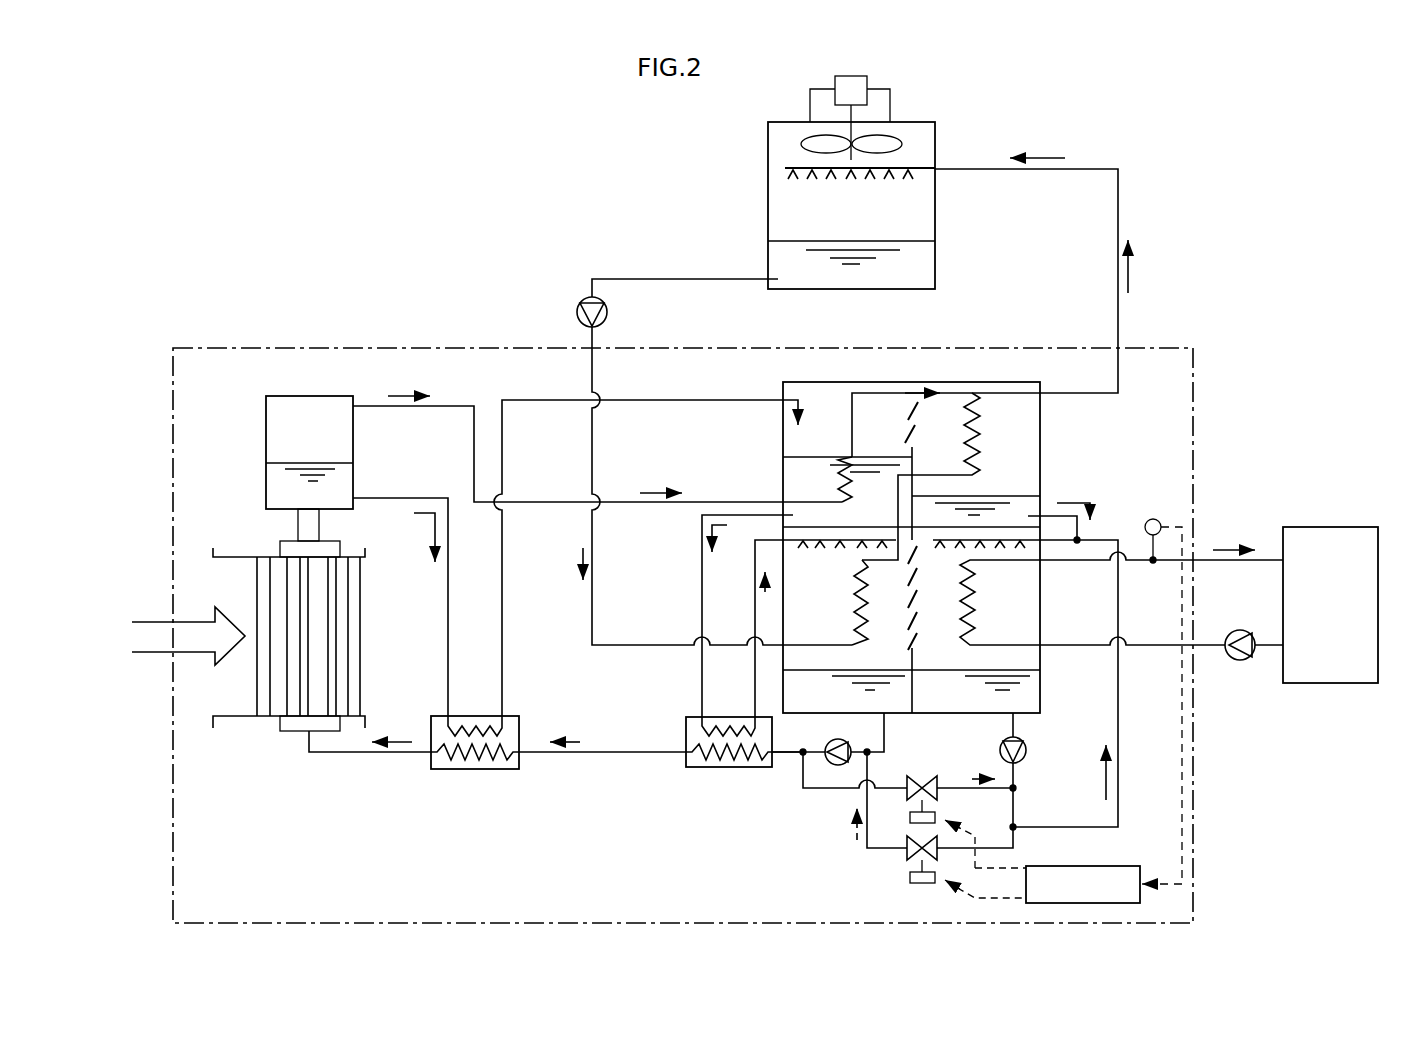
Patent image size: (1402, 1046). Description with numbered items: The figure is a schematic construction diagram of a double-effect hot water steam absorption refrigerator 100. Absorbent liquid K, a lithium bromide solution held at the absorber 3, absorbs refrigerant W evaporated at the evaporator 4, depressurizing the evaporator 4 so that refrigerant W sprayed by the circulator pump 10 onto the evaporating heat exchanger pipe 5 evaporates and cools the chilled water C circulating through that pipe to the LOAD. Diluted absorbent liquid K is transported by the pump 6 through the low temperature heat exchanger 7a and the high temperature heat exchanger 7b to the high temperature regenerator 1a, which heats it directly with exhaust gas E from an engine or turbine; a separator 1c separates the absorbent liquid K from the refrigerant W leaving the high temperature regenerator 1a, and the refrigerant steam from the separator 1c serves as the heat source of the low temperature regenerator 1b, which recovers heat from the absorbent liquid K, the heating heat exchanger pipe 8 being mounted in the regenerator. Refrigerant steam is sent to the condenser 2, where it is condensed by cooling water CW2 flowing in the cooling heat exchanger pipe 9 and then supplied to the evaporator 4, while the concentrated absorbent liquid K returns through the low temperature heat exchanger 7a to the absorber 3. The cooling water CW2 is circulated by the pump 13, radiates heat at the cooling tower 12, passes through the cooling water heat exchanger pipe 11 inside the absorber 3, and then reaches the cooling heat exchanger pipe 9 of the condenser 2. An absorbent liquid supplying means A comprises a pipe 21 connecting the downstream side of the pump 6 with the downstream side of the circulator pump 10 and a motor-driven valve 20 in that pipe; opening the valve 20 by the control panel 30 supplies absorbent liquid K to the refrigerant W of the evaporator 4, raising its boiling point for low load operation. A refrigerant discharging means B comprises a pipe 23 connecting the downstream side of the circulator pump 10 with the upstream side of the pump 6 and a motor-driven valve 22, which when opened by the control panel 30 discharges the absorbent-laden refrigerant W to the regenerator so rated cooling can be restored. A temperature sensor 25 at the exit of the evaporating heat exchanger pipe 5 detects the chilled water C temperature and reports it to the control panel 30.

The absorption refrigerator 100 is at (1198, 386).
The high temperature regenerator 1a is at (285, 735).
The low temperature regenerator 1b is at (800, 432).
The separator 1c is at (290, 396).
The condenser 2 is at (1002, 477).
The absorber 3 is at (833, 648).
The evaporator 4 is at (980, 655).
The evaporating heat exchanger pipe 5 is at (1002, 645).
The pump 6 is at (833, 766).
The low temperature heat exchanger 7a is at (730, 768).
The high temperature heat exchanger 7b is at (478, 769).
The heating heat exchanger pipe 8 is at (818, 503).
The cooling heat exchanger pipe 9 is at (1010, 393).
The circulator pump 10 is at (1027, 752).
The cooling water heat exchanger pipe 11 is at (812, 645).
The cooling tower 12 is at (768, 156).
The pump 13 is at (577, 312).
The motor-driven valve 20 is at (925, 782).
The pipe 21 is at (945, 788).
The motor-driven valve 22 is at (905, 856).
The pipe 23 is at (1015, 843).
The temperature sensor 25 is at (1153, 519).
The control panel 30 is at (1127, 866).
The absorbent liquid supplying means A is at (978, 791).
The refrigerant discharging means B is at (860, 852).
The chilled water C is at (1234, 533).
The exhaust gas E is at (171, 636).
The absorbent liquid K is at (804, 694).
The refrigerant W is at (934, 694).
The cooling water CW2 is at (679, 486).
The load LOAD is at (1330, 605).